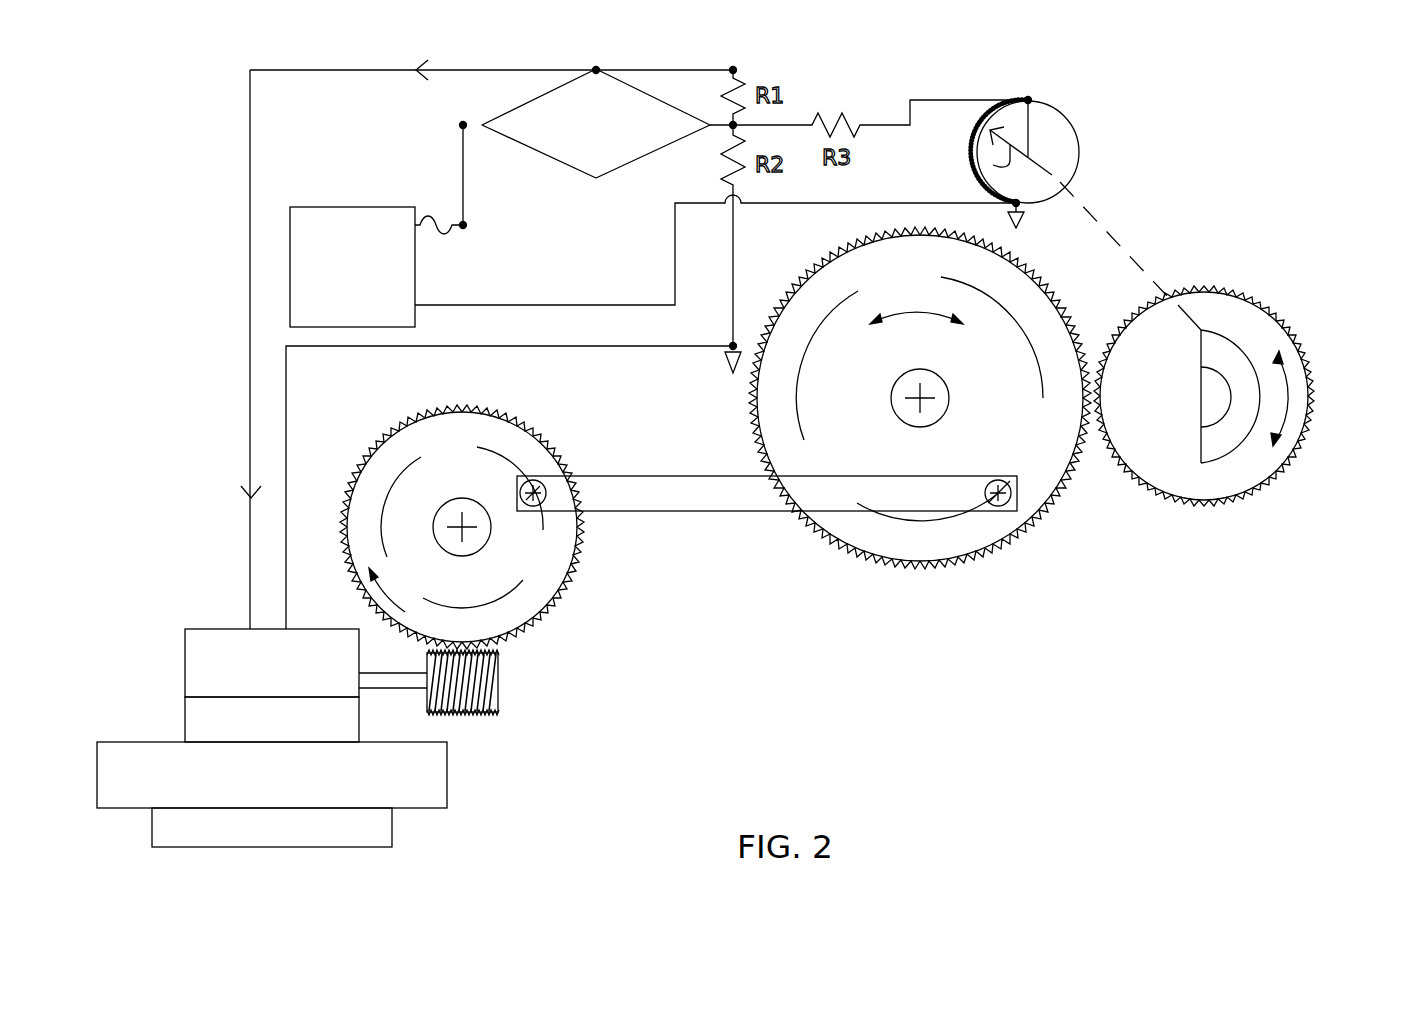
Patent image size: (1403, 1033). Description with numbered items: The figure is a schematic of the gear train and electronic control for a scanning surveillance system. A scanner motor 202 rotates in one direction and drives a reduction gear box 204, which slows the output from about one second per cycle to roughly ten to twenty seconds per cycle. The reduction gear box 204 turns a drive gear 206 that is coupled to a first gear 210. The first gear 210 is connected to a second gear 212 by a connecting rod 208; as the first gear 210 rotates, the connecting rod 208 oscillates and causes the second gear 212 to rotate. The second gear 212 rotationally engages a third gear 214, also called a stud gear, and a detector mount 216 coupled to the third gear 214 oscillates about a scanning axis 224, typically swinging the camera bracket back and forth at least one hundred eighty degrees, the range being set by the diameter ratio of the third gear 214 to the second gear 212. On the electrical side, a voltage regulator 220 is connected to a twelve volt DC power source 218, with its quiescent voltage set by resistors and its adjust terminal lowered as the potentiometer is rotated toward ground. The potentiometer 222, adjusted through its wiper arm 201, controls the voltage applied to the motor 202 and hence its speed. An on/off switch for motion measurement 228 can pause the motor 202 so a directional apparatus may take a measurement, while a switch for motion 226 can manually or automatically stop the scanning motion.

The wiper arm 201 is at (975, 157).
The scanner motor 202 is at (185, 718).
The reduction gear box 204 is at (215, 629).
The drive gear 206 is at (500, 683).
The connecting rod 208 is at (603, 507).
The first gear 210 is at (437, 442).
The second gear 212 is at (937, 548).
The third gear 214 is at (1212, 312).
The detector mount 216 is at (1217, 437).
The 12 V DC power source 218 is at (353, 207).
The voltage regulator 220 is at (593, 178).
The potentiometer 222 is at (1070, 118).
The scanning axis 224 is at (1290, 395).
The switch for motion 226 is at (392, 827).
The on/off switch for motion measurement 228 is at (446, 773).